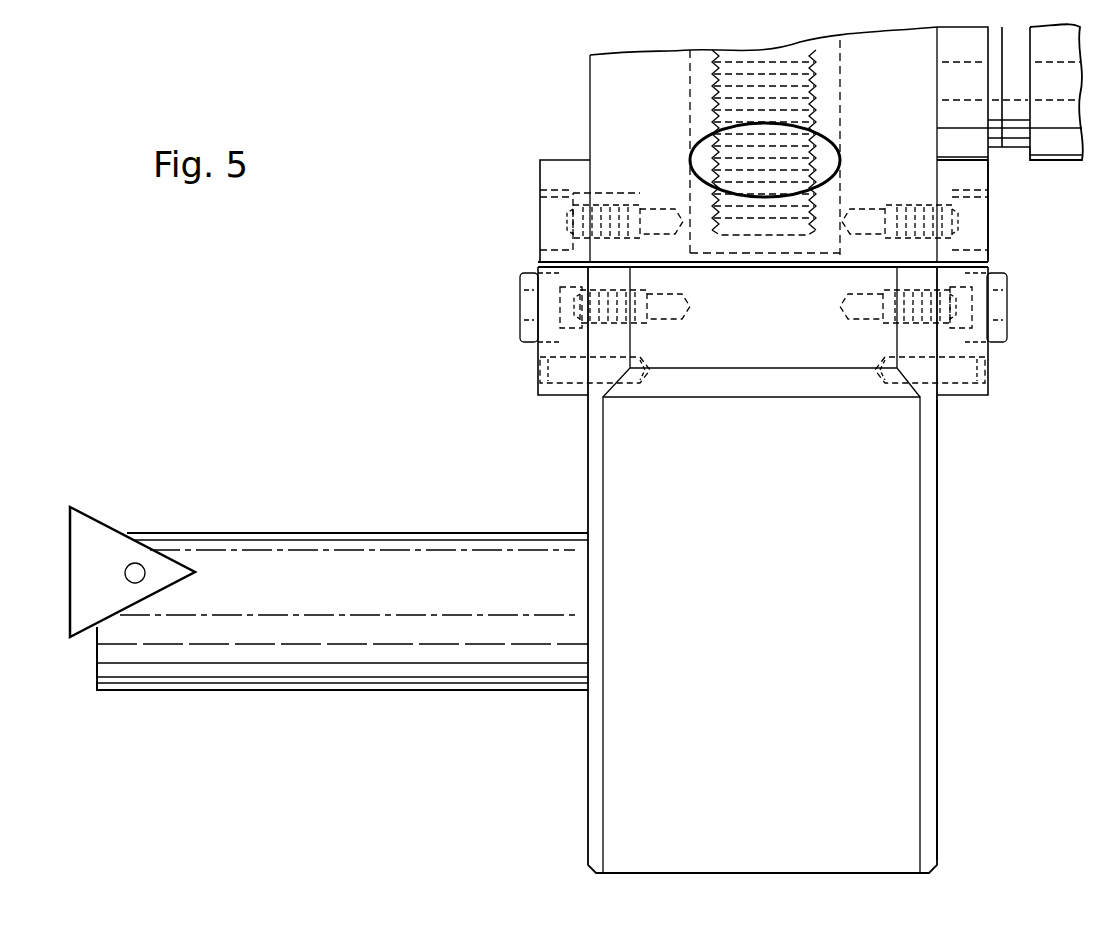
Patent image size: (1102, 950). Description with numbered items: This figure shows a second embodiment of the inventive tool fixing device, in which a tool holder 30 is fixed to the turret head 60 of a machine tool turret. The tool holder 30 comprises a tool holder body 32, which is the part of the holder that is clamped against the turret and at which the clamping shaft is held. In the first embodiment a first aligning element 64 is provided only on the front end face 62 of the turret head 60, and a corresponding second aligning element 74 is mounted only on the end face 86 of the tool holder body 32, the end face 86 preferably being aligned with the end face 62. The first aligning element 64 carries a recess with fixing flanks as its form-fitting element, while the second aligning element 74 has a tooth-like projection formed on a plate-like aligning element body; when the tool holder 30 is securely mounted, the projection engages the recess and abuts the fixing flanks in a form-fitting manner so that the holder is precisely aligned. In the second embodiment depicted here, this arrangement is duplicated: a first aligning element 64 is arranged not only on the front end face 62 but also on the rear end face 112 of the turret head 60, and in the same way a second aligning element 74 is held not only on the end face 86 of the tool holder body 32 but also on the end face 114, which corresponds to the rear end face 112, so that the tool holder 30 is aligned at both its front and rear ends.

The tool holder 30 is at (942, 598).
The tool holder body 32 is at (930, 527).
The turret head 60 is at (605, 145).
The end face 62 is at (590, 107).
The first aligning element 64 is at (538, 212).
The second aligning element 74 is at (538, 378).
The end face 86 is at (587, 440).
The rear end face 112 is at (937, 170).
The end face 114 is at (940, 345).